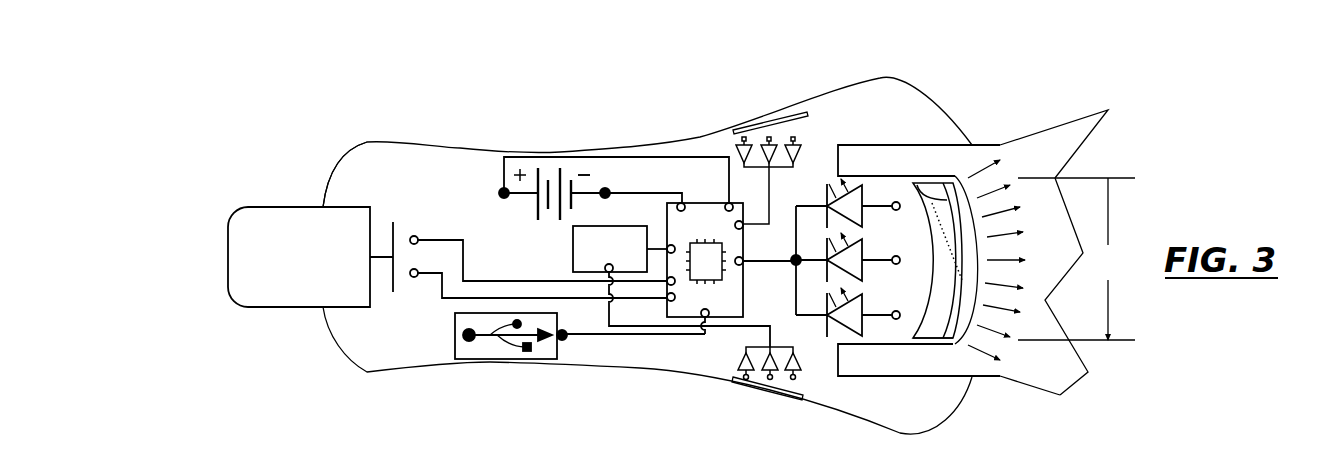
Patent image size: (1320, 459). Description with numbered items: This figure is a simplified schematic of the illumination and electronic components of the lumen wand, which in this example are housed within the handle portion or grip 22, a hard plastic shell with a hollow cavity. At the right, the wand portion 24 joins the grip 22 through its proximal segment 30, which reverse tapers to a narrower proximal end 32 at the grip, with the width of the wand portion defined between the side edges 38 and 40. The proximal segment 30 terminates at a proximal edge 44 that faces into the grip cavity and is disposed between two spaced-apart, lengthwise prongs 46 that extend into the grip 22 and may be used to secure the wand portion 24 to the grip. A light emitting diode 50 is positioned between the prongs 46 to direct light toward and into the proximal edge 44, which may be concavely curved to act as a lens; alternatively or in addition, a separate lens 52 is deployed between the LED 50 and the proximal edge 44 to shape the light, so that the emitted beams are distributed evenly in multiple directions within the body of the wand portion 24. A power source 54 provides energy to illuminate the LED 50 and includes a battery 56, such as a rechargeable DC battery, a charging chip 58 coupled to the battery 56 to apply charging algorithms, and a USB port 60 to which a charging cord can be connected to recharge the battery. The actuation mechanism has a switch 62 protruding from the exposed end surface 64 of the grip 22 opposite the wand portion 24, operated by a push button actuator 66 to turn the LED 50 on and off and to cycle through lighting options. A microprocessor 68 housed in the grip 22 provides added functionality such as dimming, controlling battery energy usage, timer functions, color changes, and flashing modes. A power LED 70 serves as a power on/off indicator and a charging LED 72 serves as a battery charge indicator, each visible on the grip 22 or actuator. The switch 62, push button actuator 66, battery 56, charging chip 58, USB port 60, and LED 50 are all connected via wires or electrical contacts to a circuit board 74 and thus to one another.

The grip 22 is at (460, 145).
The wand portion 24 is at (1130, 216).
The proximal segment 30 is at (1073, 388).
The proximal end 32 is at (977, 142).
The side edge 38 is at (1060, 122).
The side edge 40 is at (1032, 390).
The proximal edge 44 is at (920, 193).
The prongs 46 is at (863, 153).
The light emitting diode 50 is at (817, 325).
The lens 52 is at (947, 295).
The power source 54 is at (530, 227).
The battery 56 is at (603, 165).
The charging chip 58 is at (593, 245).
The USB port 60 is at (453, 334).
The switch 62 is at (403, 297).
The exposed end surface 64 is at (325, 190).
The push button actuator 66 is at (250, 242).
The microprocessor 68 is at (717, 242).
The power LED 70 is at (778, 117).
The charging LED 72 is at (762, 395).
The circuit board 74 is at (730, 297).